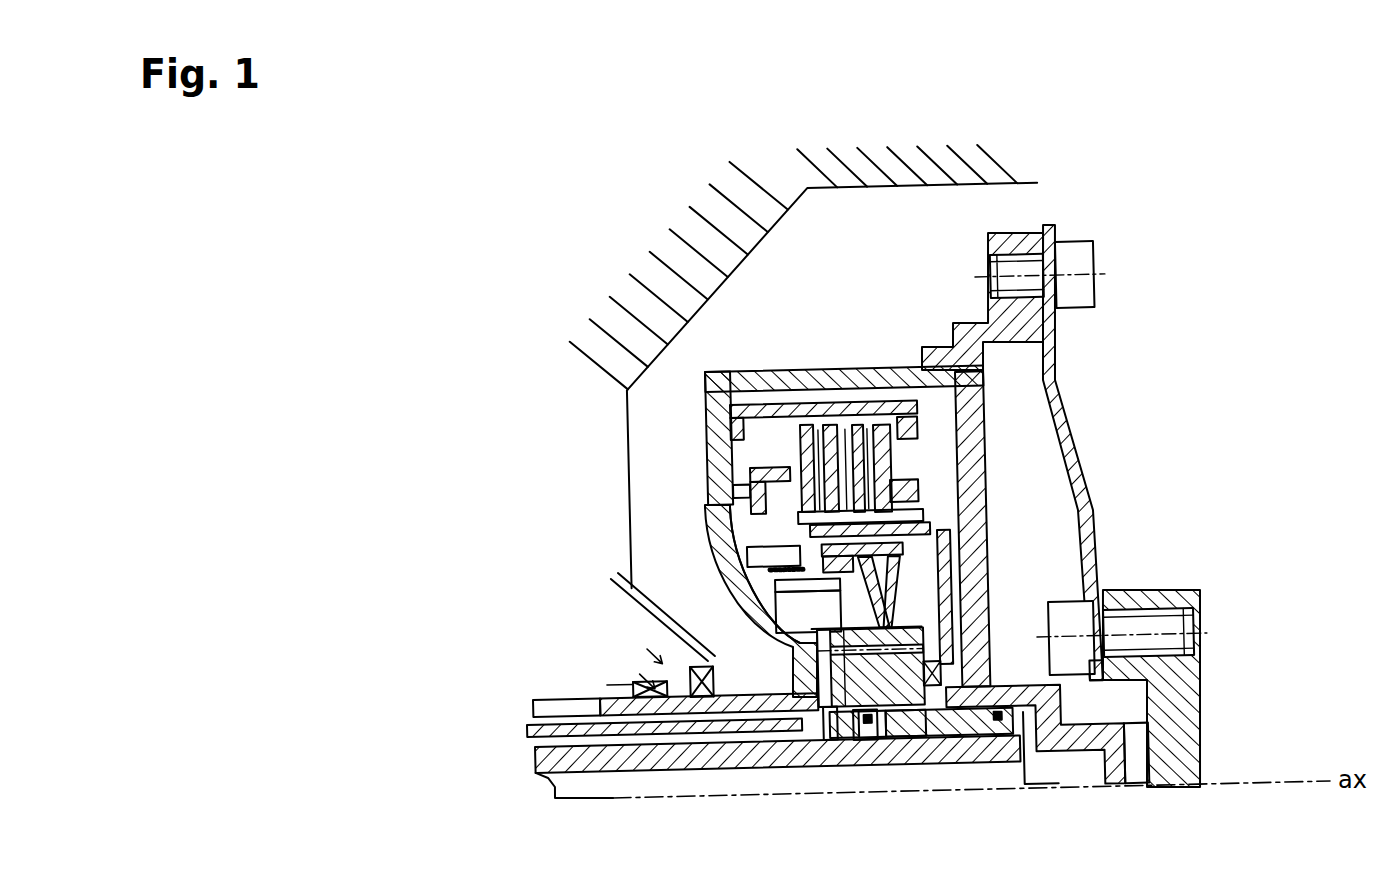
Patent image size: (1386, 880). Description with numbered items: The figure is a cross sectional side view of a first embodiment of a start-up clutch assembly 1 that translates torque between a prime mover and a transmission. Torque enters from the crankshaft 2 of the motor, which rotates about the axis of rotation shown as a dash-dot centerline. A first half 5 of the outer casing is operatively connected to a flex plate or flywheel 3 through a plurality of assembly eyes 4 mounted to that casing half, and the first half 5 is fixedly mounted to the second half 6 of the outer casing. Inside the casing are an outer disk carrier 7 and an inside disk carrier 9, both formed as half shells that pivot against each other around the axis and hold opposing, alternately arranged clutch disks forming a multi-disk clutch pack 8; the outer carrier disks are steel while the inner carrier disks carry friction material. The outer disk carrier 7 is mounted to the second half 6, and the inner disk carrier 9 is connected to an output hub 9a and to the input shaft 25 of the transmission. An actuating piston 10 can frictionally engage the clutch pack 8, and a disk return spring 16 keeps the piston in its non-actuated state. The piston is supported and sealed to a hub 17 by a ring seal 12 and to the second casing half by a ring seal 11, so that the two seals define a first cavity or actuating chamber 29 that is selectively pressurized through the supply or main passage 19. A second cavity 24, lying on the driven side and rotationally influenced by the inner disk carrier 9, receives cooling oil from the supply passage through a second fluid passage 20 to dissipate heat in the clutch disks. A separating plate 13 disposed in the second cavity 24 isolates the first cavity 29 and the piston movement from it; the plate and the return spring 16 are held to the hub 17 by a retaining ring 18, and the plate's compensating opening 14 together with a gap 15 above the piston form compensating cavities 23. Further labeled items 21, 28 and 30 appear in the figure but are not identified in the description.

The start-up clutch assembly 1 is at (818, 320).
The crankshaft 2 is at (1140, 708).
The flex plate or flywheel 3 is at (1058, 383).
The assembly eyes 4 is at (957, 323).
The first half of outer casing 5 is at (877, 373).
The second half of outer casing 6 is at (780, 606).
The outer disk carrier 7 is at (817, 373).
The multi-disk clutch pack 8 is at (783, 432).
The inside disk carrier 9 is at (985, 488).
The output hub 9a is at (947, 705).
The actuating piston 10 is at (760, 527).
The ring seal 11 is at (770, 553).
The ring seal 12 is at (832, 705).
The separating plate 13 is at (800, 522).
The compensating opening 14 is at (905, 592).
The gap 15 is at (800, 548).
The disk return spring 16 is at (760, 603).
The hub 17 is at (878, 705).
The retaining ring 18 is at (1105, 592).
The supply or main passage 19 is at (828, 705).
The second fluid passage 20 is at (913, 705).
The axial direction 21 is at (1012, 796).
The compensating cavities 23 is at (990, 530).
The second cavity 24 is at (883, 567).
The input shaft 25 is at (680, 772).
The input shaft 28 is at (550, 700).
The first cavity 29 is at (700, 658).
The disc carrier step 30 is at (748, 460).